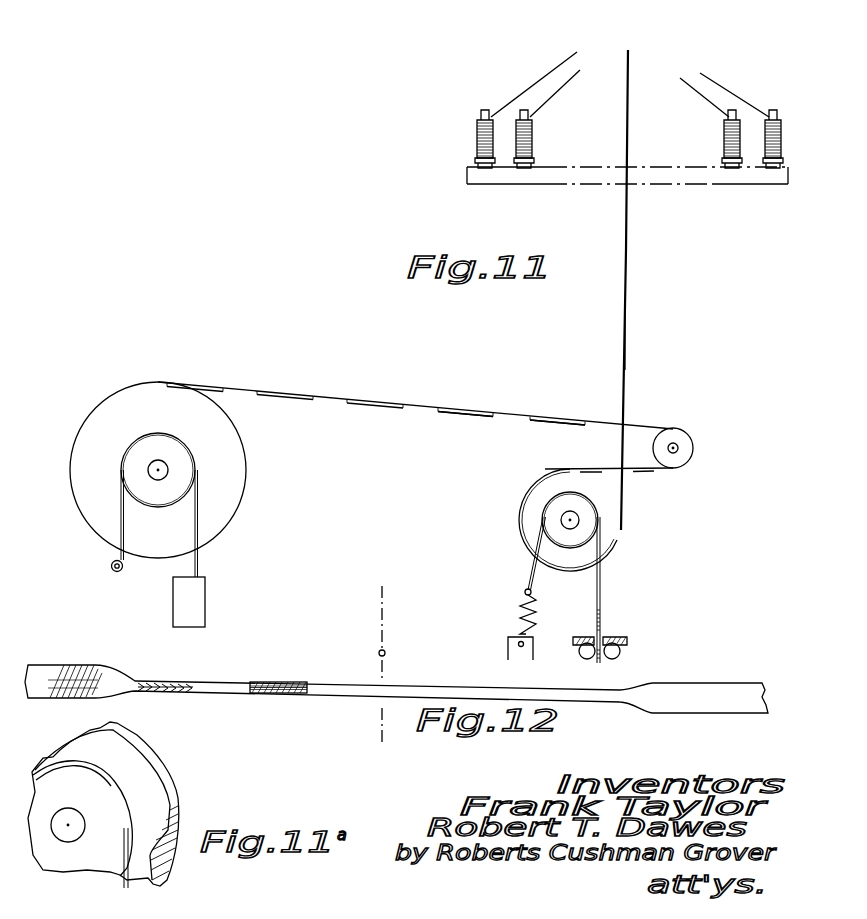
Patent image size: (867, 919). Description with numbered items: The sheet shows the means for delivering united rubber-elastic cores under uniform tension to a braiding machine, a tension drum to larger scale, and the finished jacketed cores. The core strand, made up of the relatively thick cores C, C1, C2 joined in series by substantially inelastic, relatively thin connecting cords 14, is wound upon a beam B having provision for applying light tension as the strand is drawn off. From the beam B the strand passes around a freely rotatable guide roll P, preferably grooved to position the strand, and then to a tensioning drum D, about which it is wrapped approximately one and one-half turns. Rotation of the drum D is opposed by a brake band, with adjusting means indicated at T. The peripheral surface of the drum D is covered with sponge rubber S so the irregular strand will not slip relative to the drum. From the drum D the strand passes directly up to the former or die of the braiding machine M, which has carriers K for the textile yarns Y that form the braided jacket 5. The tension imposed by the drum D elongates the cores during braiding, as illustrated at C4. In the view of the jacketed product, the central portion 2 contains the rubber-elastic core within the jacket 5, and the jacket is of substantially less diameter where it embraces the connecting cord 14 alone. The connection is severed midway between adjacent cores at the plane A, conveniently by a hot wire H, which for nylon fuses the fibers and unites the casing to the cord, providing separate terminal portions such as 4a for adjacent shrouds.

In FIG. 11, the braiding machine M is at (552, 194).
In FIG. 11, the carriers K is at (464, 132).
In FIG. 11, the textile yarns Y is at (559, 82).
In FIG. 11, the connecting cords 14 is at (626, 238).
In FIG. 12, the connecting cords 14 is at (277, 694).
In FIG. 11, the elongated core C4 is at (625, 333).
In FIG. 11, the beam B is at (250, 461).
In FIG. 12, the beam B is at (377, 716).
In FIG. 11, the core C is at (389, 392).
In FIG. 11, the core C1 is at (462, 402).
In FIG. 11, the core C2 is at (565, 413).
In FIG. 11, the guide roll P is at (691, 444).
In FIG. 11, the tensioning drum D is at (607, 506).
In FIG. 11A, the tensioning drum D is at (147, 793).
In FIG. 11, the brake band adjusting means T is at (601, 628).
In FIG. 12, the central portion 2 is at (42, 658).
In FIG. 12, the braided jacket 5 is at (74, 668).
In FIG. 12, the terminal portion 4a is at (278, 672).
In FIG. 12, the hot wire H is at (386, 652).
In FIG. 12, the severing plane A is at (380, 604).
In FIG. 11A, the sponge rubber S is at (176, 814).